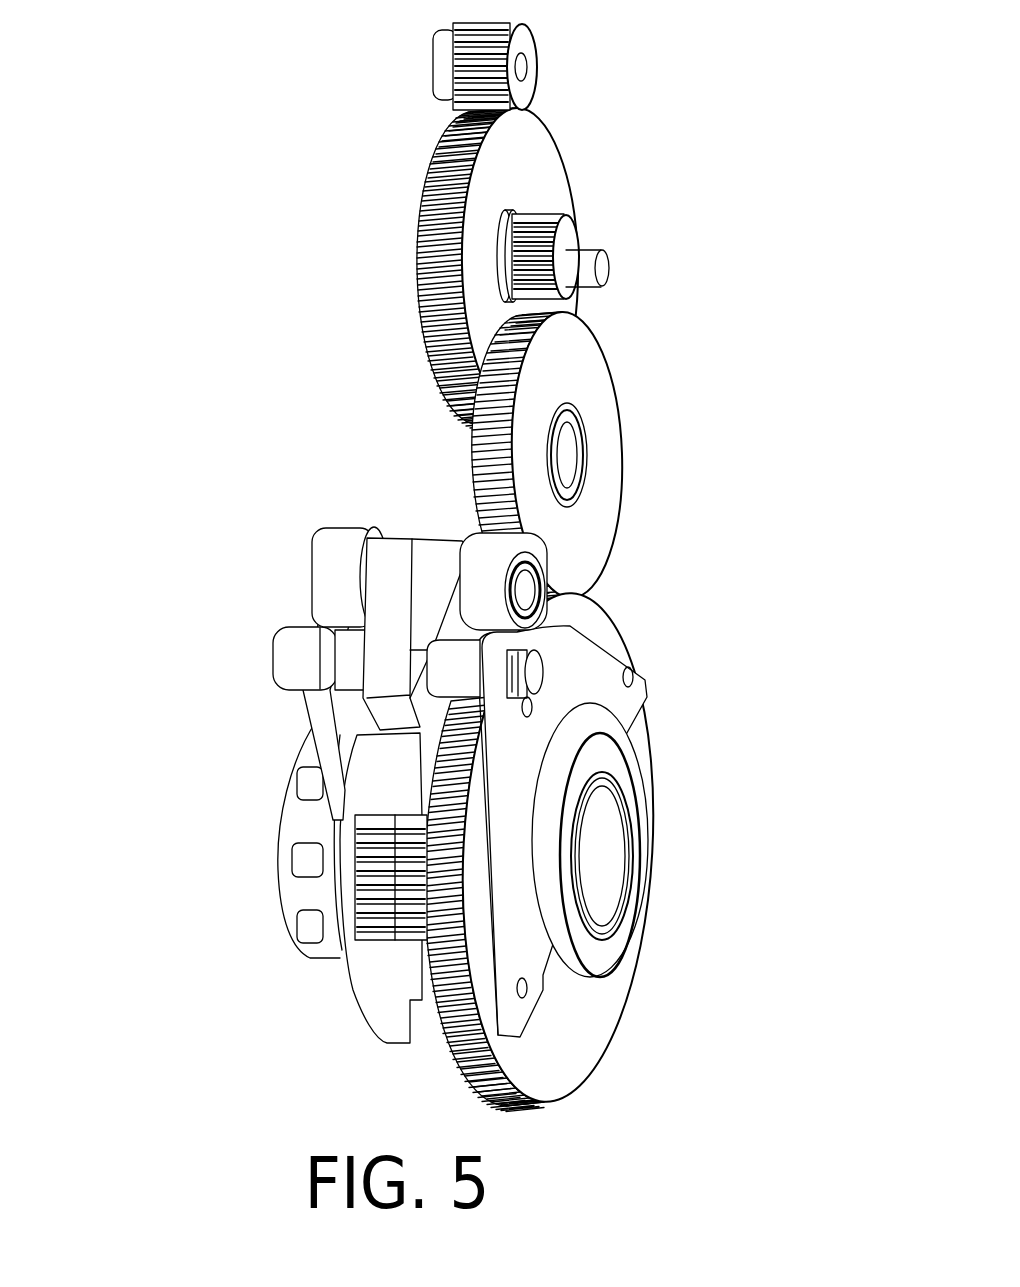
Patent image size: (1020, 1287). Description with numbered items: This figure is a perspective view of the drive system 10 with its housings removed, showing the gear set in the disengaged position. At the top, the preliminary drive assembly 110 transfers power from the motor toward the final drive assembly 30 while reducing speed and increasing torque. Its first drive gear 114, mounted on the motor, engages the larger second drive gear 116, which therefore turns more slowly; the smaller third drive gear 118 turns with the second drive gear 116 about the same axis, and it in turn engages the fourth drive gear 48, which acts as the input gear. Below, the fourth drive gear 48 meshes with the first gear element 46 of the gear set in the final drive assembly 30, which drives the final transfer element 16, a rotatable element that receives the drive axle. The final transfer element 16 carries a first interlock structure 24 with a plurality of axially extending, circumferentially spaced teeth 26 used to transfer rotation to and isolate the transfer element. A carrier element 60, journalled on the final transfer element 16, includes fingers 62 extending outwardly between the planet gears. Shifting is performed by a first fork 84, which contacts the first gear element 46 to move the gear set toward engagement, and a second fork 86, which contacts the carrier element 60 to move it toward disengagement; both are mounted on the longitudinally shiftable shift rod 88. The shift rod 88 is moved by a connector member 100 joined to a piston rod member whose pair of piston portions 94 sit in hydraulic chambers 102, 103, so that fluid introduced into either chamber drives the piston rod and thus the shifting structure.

The drive system 10 is at (431, 567).
The preliminary drive assembly 110 is at (411, 315).
The first drive gear 114 is at (477, 68).
The second drive gear 116 is at (480, 240).
The third drive gear 118 is at (540, 248).
The fourth drive gear 48 is at (570, 343).
The final drive assembly 30 is at (431, 777).
The first gear element 46 is at (583, 1005).
The first fork 84 is at (613, 693).
The piston portions 94 is at (527, 583).
The hydraulic chamber 102 is at (480, 553).
The hydraulic chamber 103 is at (327, 552).
The connector member 100 is at (400, 592).
The shift rod 88 is at (285, 650).
The second fork 86 is at (318, 700).
The first interlock structure 24 is at (303, 753).
The final transfer element 16 is at (290, 790).
The teeth 26 is at (310, 813).
The carrier element 60 is at (353, 803).
The fingers 62 is at (387, 953).